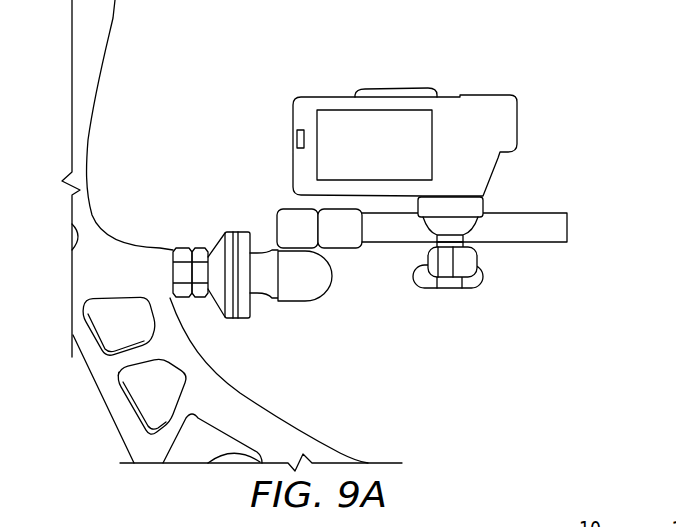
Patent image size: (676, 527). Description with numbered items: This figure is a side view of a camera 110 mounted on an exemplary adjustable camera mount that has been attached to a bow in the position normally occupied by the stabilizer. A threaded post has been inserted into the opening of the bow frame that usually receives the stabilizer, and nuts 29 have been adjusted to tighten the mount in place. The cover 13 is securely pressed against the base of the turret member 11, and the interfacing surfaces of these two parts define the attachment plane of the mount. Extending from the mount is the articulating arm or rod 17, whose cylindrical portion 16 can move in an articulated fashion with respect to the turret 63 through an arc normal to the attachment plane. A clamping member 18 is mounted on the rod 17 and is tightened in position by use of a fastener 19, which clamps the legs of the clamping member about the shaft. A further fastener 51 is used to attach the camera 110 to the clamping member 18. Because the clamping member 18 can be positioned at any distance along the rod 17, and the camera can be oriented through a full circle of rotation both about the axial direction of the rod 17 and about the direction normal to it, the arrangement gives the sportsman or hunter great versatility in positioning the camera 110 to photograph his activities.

The camera 110 is at (333, 95).
The cylindrical portion 16 is at (270, 227).
The clamping member 18 is at (485, 207).
The rod 17 is at (543, 242).
The fastener 51 is at (480, 260).
The fastener 19 is at (448, 290).
The turret 63 is at (332, 275).
The turret member 11 is at (253, 295).
The cover 13 is at (203, 302).
The nuts 29 is at (202, 248).